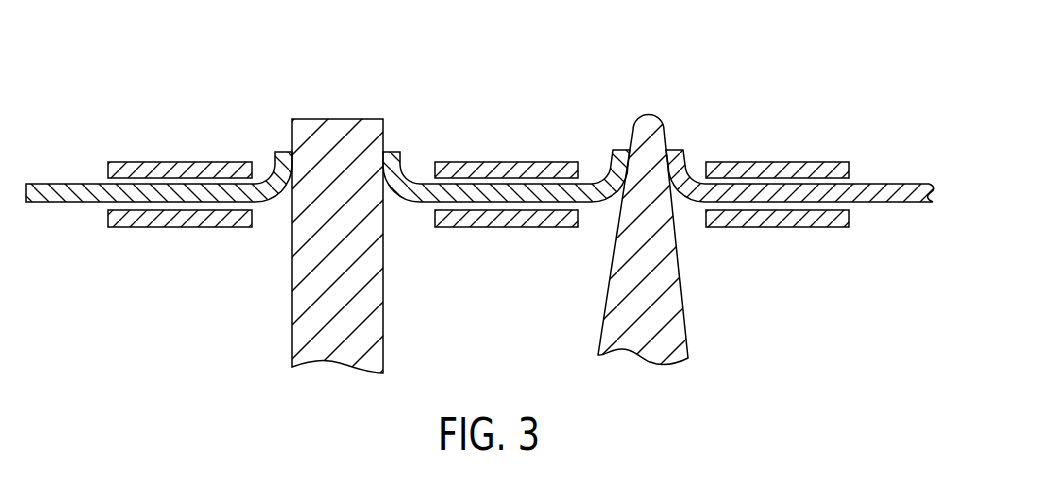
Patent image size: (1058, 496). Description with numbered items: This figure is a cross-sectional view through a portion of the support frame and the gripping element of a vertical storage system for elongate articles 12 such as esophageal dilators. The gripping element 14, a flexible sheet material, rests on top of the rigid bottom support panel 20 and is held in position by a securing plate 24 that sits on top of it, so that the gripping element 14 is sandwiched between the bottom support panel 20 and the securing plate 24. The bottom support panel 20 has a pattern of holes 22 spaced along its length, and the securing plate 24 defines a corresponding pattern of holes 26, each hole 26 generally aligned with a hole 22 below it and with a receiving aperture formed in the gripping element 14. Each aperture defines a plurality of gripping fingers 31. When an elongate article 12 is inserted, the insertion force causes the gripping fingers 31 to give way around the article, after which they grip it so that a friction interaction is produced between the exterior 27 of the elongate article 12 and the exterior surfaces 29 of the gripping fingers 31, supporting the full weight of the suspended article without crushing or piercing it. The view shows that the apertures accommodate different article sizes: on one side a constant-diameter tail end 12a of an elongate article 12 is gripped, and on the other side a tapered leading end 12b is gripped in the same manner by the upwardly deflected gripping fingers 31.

The elongate article 12 is at (490, 208).
The constant-diameter tail end 12a is at (338, 132).
The tapered leading end 12b is at (642, 123).
The gripping element 14 is at (85, 198).
The bottom support panel 20 is at (140, 215).
The holes 22 is at (255, 234).
The securing plate 24 is at (140, 167).
The holes 26 is at (251, 153).
The exterior 27 is at (399, 300).
The exterior surfaces 29 is at (284, 197).
The gripping fingers 31 is at (277, 165).